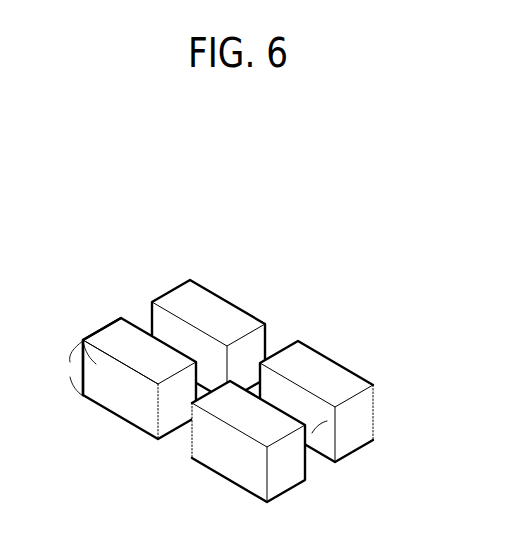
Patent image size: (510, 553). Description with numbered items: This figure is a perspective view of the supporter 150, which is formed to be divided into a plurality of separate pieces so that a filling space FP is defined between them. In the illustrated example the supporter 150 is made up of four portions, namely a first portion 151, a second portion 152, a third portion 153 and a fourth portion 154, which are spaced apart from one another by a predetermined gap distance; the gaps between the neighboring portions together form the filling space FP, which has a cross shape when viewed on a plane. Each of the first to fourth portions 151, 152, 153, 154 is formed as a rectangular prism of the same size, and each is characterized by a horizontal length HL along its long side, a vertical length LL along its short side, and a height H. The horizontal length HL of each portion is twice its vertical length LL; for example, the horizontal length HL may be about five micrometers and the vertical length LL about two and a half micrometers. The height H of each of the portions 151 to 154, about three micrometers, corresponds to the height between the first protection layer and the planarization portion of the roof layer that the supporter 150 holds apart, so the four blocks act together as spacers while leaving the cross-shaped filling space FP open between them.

The supporter 150 is at (225, 361).
The first portion 151 is at (128, 407).
The second portion 152 is at (212, 304).
The third portion 153 is at (333, 373).
The fourth portion 154 is at (235, 465).
The vertical length LL is at (119, 319).
The horizontal length HL is at (157, 385).
The height H is at (78, 368).
The filling space FP is at (312, 433).